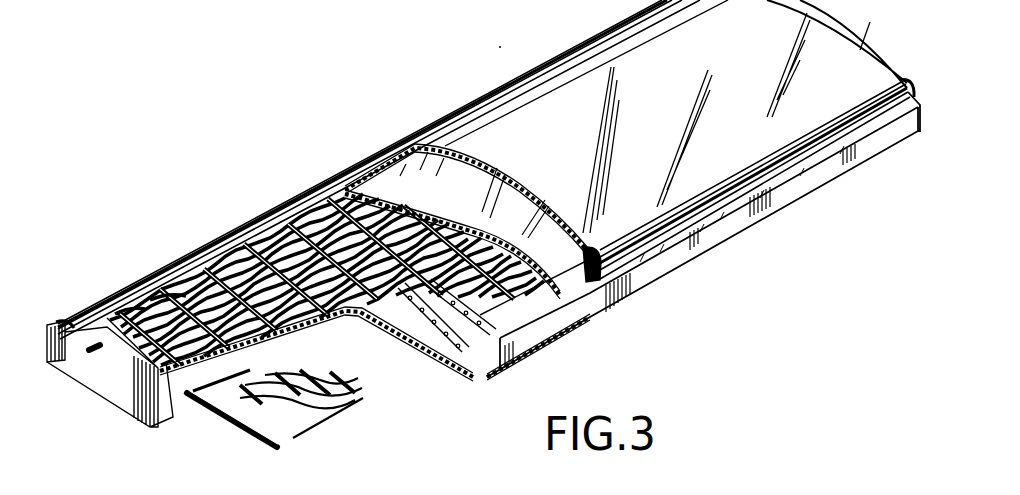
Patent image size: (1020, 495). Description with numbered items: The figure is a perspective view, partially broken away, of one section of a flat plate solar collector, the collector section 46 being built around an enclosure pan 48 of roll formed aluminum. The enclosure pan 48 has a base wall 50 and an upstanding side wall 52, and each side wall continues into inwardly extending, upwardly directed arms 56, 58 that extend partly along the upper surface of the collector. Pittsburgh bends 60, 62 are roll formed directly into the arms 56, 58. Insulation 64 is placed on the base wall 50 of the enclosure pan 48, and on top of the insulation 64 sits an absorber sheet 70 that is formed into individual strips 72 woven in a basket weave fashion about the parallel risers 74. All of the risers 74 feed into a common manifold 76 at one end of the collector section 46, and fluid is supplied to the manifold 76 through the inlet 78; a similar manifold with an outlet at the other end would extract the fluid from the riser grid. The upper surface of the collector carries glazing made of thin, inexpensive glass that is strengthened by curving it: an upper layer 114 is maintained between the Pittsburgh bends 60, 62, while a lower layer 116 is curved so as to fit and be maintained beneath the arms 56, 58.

The collector section 46 is at (567, 77).
The enclosure pan 48 is at (460, 375).
The base wall 50 is at (473, 370).
The side wall 52 is at (690, 262).
The arm 56 is at (720, 213).
The arm 58 is at (58, 324).
The Pittsburgh bend 60 is at (787, 153).
The Pittsburgh bend 62 is at (127, 290).
The insulation 64 is at (560, 327).
The absorber sheet 70 is at (193, 277).
The strips 72 is at (243, 270).
The risers 74 is at (180, 287).
The manifold 76 is at (210, 410).
The inlet 78 is at (94, 354).
The upper layer 114 is at (463, 147).
The lower layer 116 is at (413, 193).